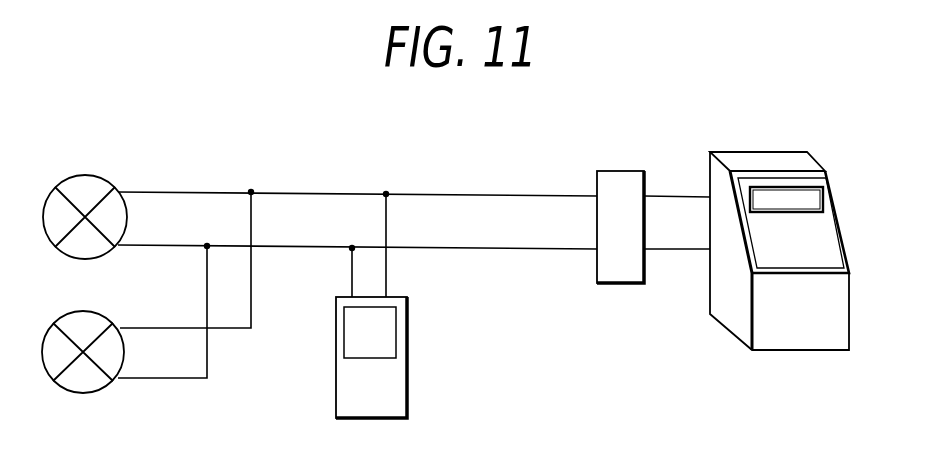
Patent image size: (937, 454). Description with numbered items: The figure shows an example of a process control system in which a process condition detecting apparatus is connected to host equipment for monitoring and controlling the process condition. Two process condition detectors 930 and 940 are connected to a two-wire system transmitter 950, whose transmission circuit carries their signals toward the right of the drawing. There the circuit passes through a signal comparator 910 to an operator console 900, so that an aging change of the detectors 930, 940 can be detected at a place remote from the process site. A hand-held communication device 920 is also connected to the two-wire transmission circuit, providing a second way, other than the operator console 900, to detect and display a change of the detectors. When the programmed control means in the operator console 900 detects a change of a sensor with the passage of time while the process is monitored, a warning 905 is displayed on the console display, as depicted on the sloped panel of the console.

The operator console 900 is at (760, 152).
The warning 905 is at (823, 203).
The signal comparator 910 is at (630, 171).
The hand-held communication device 920 is at (405, 360).
The process condition detector 930 is at (110, 180).
The process condition detector 940 is at (107, 317).
The two-wire system transmitter 950 is at (478, 193).